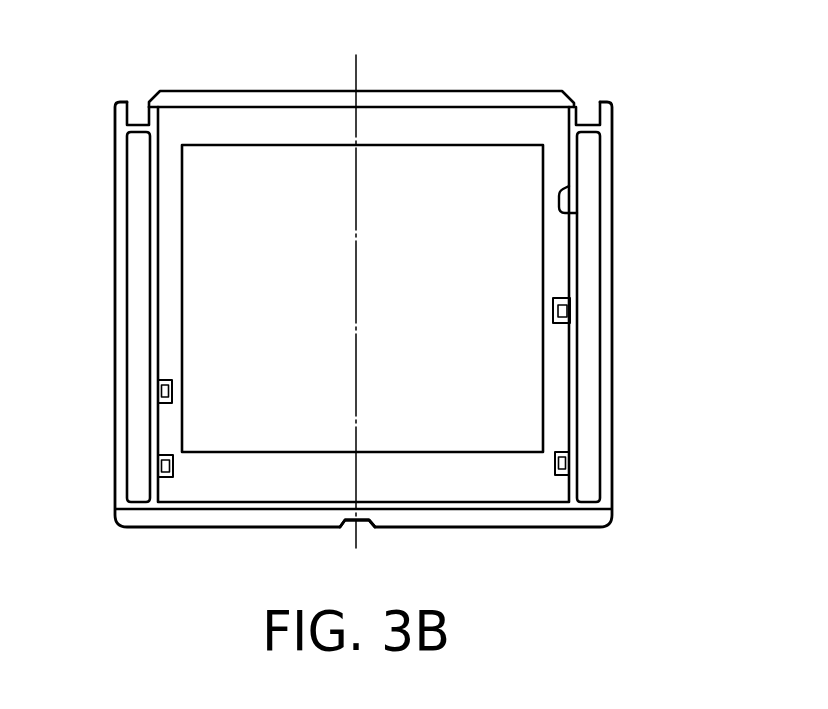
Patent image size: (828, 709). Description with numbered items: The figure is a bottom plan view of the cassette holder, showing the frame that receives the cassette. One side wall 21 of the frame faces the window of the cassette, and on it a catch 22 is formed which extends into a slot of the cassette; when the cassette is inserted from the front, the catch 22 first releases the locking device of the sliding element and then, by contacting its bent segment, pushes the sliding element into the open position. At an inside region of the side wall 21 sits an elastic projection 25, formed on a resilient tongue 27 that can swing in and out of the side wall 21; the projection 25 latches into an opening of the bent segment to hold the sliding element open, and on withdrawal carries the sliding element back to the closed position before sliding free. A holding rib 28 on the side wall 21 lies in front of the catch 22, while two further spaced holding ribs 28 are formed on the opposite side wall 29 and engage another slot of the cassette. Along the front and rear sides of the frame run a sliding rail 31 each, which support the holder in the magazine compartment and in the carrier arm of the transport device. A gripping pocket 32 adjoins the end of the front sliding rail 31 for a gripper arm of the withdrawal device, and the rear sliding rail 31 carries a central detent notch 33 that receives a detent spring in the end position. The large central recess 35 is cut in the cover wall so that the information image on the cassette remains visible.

The side wall 21 is at (573, 290).
The catch 22 is at (563, 313).
The elastic projection 25 is at (560, 202).
The resilient tongue 27 is at (577, 215).
The holding rib 28 is at (162, 390).
The side wall 29 is at (152, 282).
The sliding rail 31 is at (462, 100).
The gripping pocket 32 is at (134, 118).
The detent notch 33 is at (348, 520).
The recess 35 is at (183, 295).